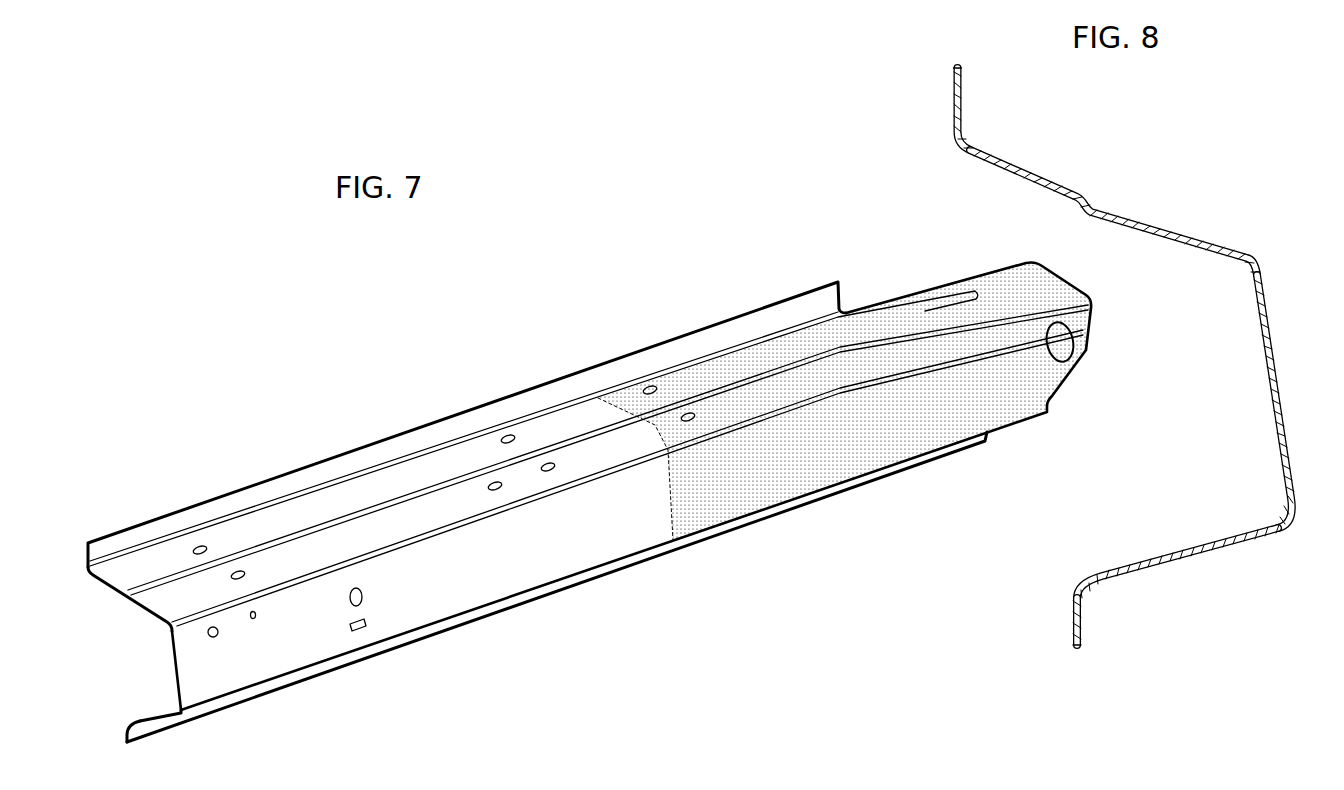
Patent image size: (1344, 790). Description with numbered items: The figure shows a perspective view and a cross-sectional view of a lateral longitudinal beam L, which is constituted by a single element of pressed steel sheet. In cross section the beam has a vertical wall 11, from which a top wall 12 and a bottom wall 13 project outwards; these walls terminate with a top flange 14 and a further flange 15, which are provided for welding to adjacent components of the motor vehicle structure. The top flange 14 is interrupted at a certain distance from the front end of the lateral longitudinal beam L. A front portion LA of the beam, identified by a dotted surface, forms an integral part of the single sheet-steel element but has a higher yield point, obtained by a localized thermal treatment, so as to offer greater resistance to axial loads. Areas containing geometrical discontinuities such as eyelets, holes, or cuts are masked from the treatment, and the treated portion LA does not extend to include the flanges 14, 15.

In FIG. 7, the vertical wall 11 is at (420, 613).
In FIG. 8, the vertical wall 11 is at (1278, 350).
In FIG. 7, the top wall 12 is at (113, 572).
In FIG. 8, the top wall 12 is at (1043, 178).
In FIG. 7, the bottom wall 13 is at (167, 702).
In FIG. 8, the bottom wall 13 is at (1185, 556).
In FIG. 7, the top flange 14 is at (436, 431).
In FIG. 8, the top flange 14 is at (953, 90).
In FIG. 7, the top flange 15 is at (148, 717).
In FIG. 8, the top flange 15 is at (1081, 618).
In FIG. 7, the lateral longitudinal beam L is at (247, 405).
In FIG. 8, the lateral longitudinal beam L is at (1256, 225).
In FIG. 7, the front portion LA is at (750, 488).